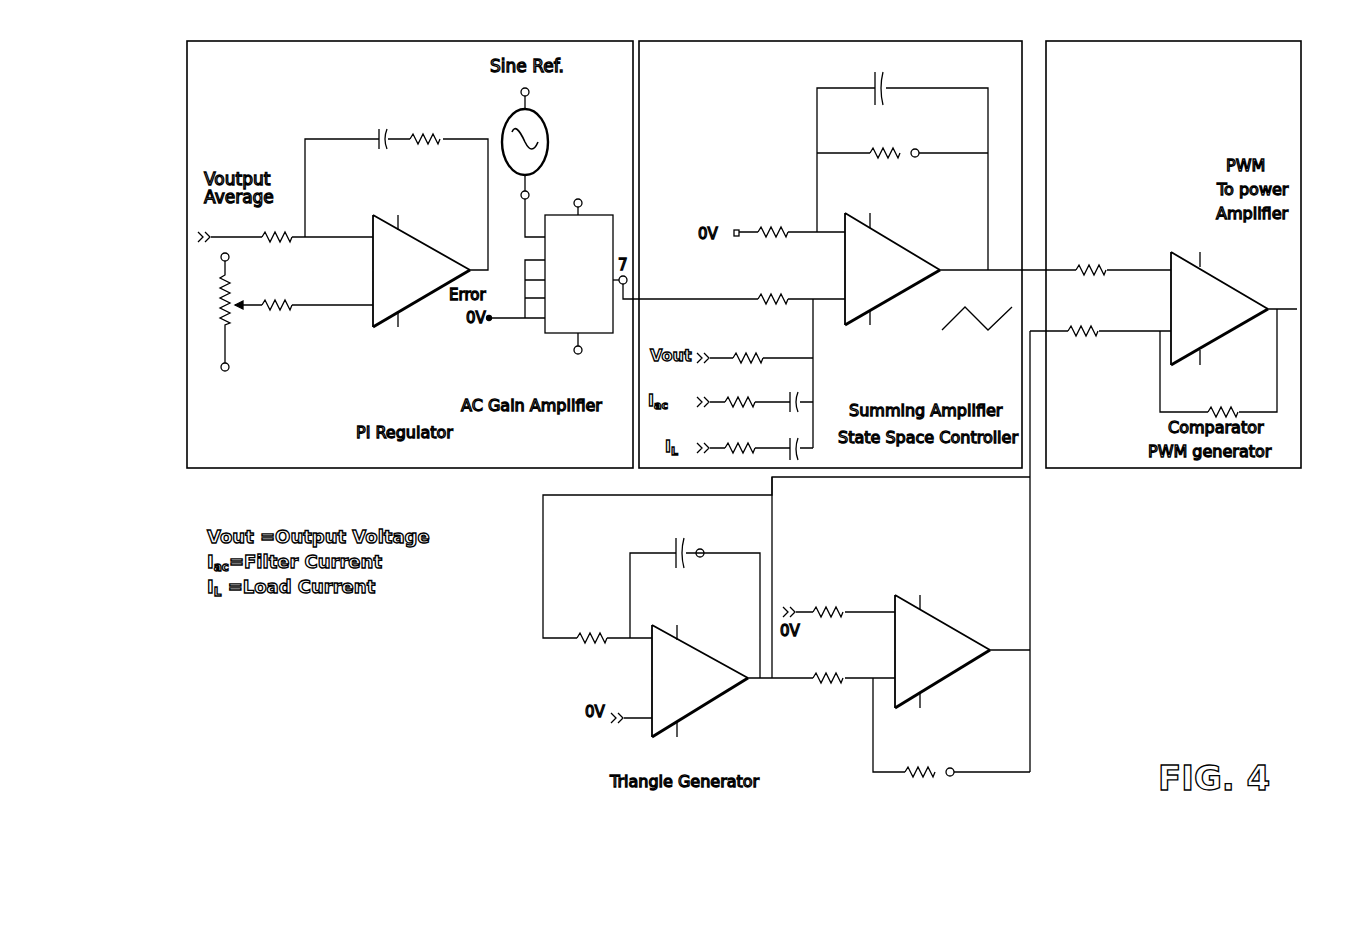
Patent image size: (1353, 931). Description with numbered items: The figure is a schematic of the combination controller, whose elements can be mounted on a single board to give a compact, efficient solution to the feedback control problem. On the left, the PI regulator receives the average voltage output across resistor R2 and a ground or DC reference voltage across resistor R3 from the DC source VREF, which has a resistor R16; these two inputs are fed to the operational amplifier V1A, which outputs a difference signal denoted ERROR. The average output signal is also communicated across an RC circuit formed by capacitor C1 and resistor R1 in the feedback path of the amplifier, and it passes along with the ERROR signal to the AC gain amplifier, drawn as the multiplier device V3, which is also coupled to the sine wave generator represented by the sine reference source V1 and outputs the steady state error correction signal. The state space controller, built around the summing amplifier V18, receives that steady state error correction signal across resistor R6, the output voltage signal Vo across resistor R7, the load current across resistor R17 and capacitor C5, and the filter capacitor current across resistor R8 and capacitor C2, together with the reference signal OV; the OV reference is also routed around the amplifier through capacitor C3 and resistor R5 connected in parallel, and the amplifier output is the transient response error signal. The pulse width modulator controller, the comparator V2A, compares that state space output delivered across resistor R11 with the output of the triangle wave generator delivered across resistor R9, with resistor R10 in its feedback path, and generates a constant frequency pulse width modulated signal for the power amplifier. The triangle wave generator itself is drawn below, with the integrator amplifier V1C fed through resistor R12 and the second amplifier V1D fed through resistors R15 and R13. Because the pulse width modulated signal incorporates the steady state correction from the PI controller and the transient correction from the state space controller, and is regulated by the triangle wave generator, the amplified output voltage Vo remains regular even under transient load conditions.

The resistor R1 is at (436, 129).
The resistor R2 is at (275, 227).
The resistor R3 is at (275, 296).
The resistor R16 is at (233, 312).
The capacitor C1 is at (386, 122).
The PI regulator operational amplifier V1A is at (411, 270).
The sine reference voltage source V1 is at (538, 145).
The AD633 analog multiplier (AC gain amplifier) V3 is at (542, 269).
The resistor R5 is at (886, 142).
The capacitor C3 is at (878, 75).
The summing amplifier operational amplifier V18 is at (884, 268).
The resistor R6 is at (772, 290).
The resistor R7 is at (744, 347).
The resistor R8 is at (741, 392).
The resistor R17 is at (741, 438).
The capacitor C2 is at (800, 389).
The capacitor C5 is at (800, 437).
The resistor R11 is at (1093, 260).
The resistor R9 is at (1083, 322).
The comparator hysteresis feedback resistor R10 is at (1237, 402).
The comparator / PWM generator operational amplifier V2A is at (1217, 301).
The triangle generator integrator input resistor R12 is at (589, 627).
The triangle generator integrator operational amplifier V1C is at (697, 680).
The triangle generator 0V input resistor R15 is at (831, 601).
The triangle generator schmitt input resistor R13 is at (831, 667).
The triangle generator schmitt trigger operational amplifier V1D is at (943, 652).